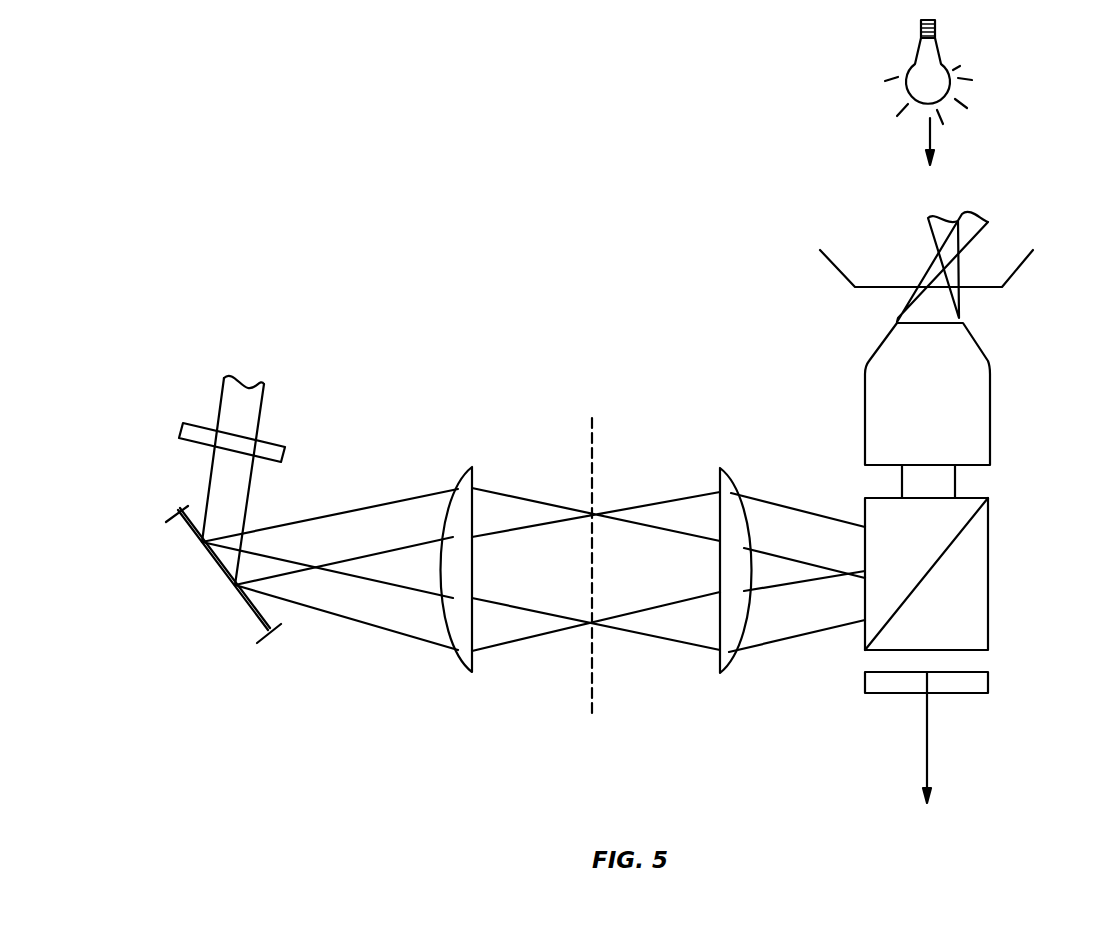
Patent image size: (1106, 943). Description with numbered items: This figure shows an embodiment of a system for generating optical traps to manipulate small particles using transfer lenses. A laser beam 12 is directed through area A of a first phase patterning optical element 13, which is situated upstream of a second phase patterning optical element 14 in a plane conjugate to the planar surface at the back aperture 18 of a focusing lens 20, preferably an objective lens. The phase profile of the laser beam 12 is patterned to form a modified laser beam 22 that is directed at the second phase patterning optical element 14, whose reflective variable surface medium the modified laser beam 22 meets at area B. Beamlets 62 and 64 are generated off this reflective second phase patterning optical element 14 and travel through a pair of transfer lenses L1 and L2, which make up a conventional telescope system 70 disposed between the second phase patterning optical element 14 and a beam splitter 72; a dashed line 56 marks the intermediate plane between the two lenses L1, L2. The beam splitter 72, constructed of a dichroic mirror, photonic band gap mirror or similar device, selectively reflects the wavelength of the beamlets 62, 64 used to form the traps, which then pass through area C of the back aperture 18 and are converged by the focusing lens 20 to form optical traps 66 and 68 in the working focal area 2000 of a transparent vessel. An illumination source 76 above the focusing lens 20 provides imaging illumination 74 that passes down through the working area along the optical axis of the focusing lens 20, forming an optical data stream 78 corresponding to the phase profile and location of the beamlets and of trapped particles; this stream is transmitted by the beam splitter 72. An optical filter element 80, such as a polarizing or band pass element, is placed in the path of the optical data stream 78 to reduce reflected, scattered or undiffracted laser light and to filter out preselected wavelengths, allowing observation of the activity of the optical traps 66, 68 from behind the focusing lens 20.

The laser beam 12 is at (253, 410).
The first phase patterning optical element 13 is at (286, 452).
The second phase patterning optical element 14 is at (243, 607).
The back aperture 18 is at (957, 423).
The focusing lens 20 is at (990, 410).
The modified laser beam 22 is at (236, 513).
The focal plane 56 is at (598, 714).
The beamlet 62 is at (380, 515).
The beamlet 64 is at (380, 617).
The optical trap 66 is at (934, 247).
The optical trap 68 is at (985, 226).
The telescope system 70 is at (720, 420).
The beam splitter 72 is at (993, 541).
The imaging illumination 74 is at (932, 130).
The illumination source 76 is at (957, 70).
The optical data stream 78 is at (930, 736).
The optical filter element 80 is at (990, 684).
The working focal area 2000 is at (1022, 268).
The area A is at (196, 428).
The area B is at (203, 563).
The area C is at (937, 465).
The first lens L1 is at (462, 664).
The second lens L2 is at (728, 668).